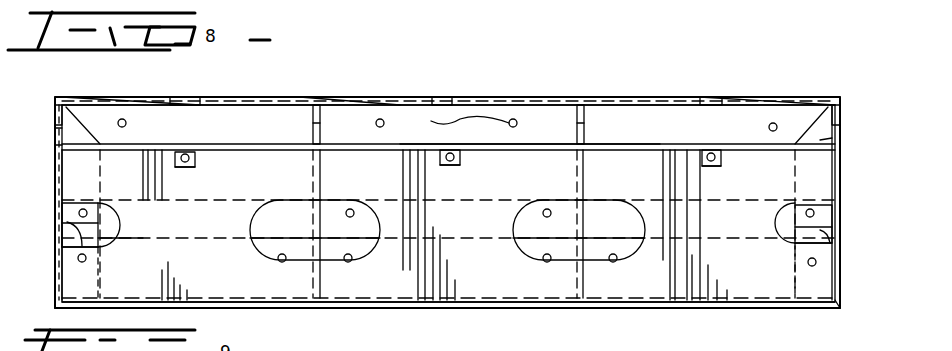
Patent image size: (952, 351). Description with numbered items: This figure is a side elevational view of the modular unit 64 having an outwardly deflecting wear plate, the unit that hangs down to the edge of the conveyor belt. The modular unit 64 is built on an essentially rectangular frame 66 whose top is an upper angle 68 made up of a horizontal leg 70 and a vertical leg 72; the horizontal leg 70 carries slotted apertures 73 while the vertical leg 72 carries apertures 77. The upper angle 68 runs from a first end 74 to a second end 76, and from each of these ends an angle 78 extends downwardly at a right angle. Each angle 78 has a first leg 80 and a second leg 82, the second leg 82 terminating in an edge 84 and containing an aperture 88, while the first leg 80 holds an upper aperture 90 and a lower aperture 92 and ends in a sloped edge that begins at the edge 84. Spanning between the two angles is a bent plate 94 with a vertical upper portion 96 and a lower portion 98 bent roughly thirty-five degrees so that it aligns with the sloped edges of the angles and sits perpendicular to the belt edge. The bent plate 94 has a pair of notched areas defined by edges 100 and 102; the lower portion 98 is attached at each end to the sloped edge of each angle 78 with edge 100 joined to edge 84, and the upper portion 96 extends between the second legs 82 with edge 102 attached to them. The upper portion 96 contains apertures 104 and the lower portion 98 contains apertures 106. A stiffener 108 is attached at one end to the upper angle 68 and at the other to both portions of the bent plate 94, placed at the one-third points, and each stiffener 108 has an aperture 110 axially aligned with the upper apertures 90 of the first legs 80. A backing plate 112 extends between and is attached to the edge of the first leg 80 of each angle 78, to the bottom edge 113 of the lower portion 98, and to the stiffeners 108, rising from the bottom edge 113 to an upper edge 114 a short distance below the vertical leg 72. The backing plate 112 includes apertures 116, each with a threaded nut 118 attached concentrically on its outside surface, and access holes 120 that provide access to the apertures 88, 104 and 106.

The modular unit 64 is at (672, 78).
The frame 66 is at (842, 309).
The upper angle 68 is at (469, 97).
The horizontal leg 70 is at (337, 97).
The vertical leg 72 is at (262, 118).
The slotted apertures 73 is at (184, 97).
The first end 74 is at (93, 97).
The second end 76 is at (812, 97).
The apertures 77 is at (126, 123).
The angle 78 is at (54, 137).
The first leg 80 is at (55, 170).
The second leg 82 is at (87, 170).
The edge 84 is at (58, 223).
The aperture 88 is at (58, 205).
The upper aperture 90 is at (55, 110).
The lower aperture 92 is at (55, 237).
The bent plate 94 is at (225, 192).
The upper portion 96 is at (503, 200).
The lower portion 98 is at (480, 290).
The edge 100 is at (97, 258).
The edge 102 is at (118, 227).
The apertures 104 is at (352, 209).
The apertures 106 is at (80, 262).
The stiffener 108 is at (323, 170).
The aperture 110 is at (313, 123).
The backing plate 112 is at (340, 287).
The bottom edge 113 is at (277, 310).
The upper edge 114 is at (530, 147).
The apertures 116 is at (205, 150).
The threaded nut 118 is at (195, 160).
The access holes 120 is at (143, 238).